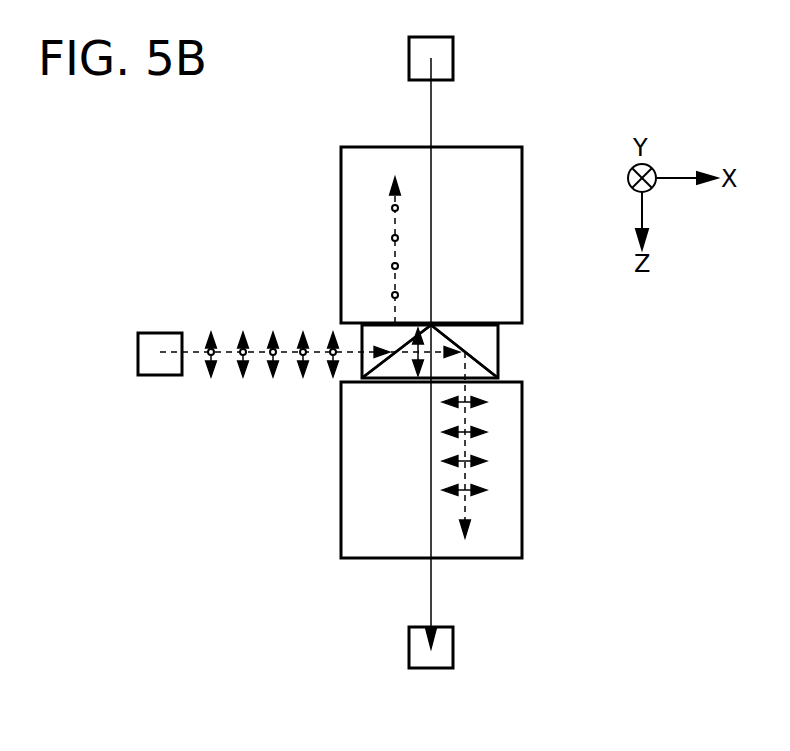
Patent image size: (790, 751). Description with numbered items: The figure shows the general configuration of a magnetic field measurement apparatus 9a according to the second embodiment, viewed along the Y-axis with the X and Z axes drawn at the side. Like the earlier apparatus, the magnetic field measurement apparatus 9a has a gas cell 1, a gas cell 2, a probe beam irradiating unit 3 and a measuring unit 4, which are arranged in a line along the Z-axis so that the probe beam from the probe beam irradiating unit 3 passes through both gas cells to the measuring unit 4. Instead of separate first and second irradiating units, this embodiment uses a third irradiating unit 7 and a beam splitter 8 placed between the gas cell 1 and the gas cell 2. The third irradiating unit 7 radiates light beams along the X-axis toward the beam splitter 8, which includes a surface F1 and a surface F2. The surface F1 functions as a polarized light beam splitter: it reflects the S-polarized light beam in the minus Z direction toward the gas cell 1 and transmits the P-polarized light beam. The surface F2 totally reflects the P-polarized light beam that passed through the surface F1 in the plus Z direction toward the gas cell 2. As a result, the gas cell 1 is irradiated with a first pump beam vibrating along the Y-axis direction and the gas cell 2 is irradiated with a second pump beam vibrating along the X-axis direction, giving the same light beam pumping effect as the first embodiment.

The gas cell 1 is at (512, 222).
The gas cell 2 is at (515, 478).
The probe beam irradiating unit 3 is at (447, 66).
The measuring unit 4 is at (450, 652).
The third irradiating unit 7 is at (157, 333).
The beam splitter 8 is at (499, 343).
The magnetic field measurement apparatus 9a is at (626, 596).
The surface F1 is at (373, 382).
The surface F2 is at (500, 372).